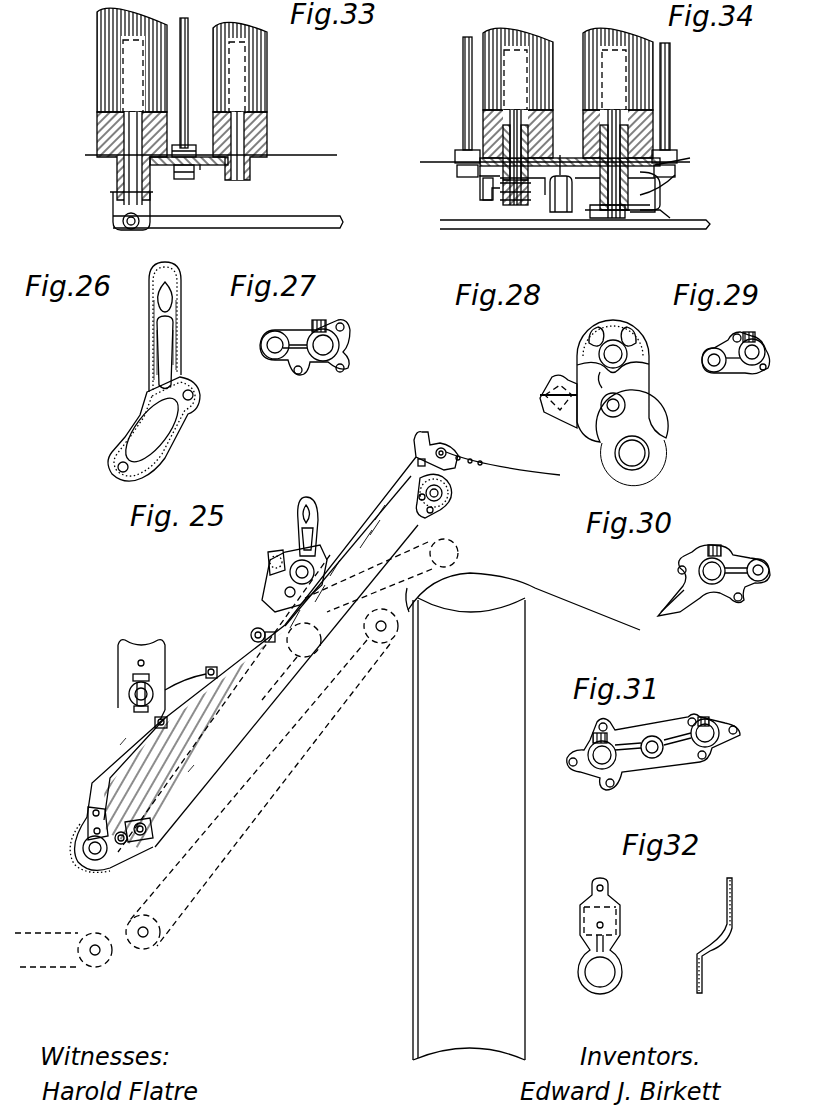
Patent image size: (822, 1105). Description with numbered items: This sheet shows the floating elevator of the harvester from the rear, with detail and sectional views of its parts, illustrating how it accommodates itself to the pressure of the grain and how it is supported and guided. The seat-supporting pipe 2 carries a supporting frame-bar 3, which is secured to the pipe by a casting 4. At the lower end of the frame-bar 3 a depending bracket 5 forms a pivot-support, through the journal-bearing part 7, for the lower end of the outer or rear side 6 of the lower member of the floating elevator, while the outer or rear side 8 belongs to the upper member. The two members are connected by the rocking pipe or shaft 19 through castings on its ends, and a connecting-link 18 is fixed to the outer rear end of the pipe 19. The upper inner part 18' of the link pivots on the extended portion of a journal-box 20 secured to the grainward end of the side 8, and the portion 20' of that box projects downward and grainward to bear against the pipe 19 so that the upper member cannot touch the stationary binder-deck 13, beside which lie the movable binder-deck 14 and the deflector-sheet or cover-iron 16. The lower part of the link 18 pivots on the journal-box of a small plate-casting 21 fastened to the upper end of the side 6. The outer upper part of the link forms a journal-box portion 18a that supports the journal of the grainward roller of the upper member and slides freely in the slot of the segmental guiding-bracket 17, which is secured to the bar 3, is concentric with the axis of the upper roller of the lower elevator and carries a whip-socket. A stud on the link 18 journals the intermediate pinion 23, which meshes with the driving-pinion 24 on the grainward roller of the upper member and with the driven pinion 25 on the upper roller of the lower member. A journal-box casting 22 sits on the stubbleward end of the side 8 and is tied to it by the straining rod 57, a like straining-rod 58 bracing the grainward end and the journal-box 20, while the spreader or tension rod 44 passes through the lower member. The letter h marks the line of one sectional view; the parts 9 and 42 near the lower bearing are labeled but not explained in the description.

In FIG. 25, the seat-supporting pipe 2 is at (118, 695).
In FIG. 33, the supporting frame-bar 3 is at (250, 218).
In FIG. 34, the supporting frame-bar 3 is at (575, 233).
In FIG. 25, the supporting frame-bar 3 is at (113, 742).
In FIG. 25, the casting 4 is at (186, 697).
In FIG. 33, the depending bracket 5 is at (113, 212).
In FIG. 32, the depending bracket 5 is at (580, 946).
In FIG. 25, the depending bracket 5 is at (86, 826).
In FIG. 33, the outer or rear side of the lower member of the floating elevator 6 is at (211, 168).
In FIG. 34, the outer or rear side of the lower member of the floating elevator 6 is at (555, 170).
In FIG. 25, the outer or rear side of the lower member of the floating elevator 6 is at (182, 770).
In FIG. 33, the journal-bearing part 7 is at (208, 166).
In FIG. 31, the journal-bearing part 7 is at (638, 738).
In FIG. 25, the journal-bearing part 7 is at (83, 848).
In FIG. 34, the outer or rear side of the upper member of the floating elevator 8 is at (673, 152).
In FIG. 25, the outer or rear side of the upper member of the floating elevator 8 is at (266, 651).
In FIG. 25, the bearing cap 9 is at (72, 862).
In FIG. 25, the fixed or stationary binder-deck 13 is at (458, 582).
In FIG. 34, the movable binder-deck 14 is at (459, 107).
In FIG. 25, the movable binder-deck 14 is at (524, 601).
In FIG. 25, the deflector-sheet or cover-iron 16 is at (503, 463).
In FIG. 34, the segmental guiding-bracket 17 is at (650, 218).
In FIG. 26, the segmental guiding-bracket 17 is at (148, 347).
In FIG. 25, the segmental guiding-bracket 17 is at (298, 532).
In FIG. 34, the connecting-link 18 is at (567, 193).
In FIG. 28, the connecting-link 18 is at (599, 403).
In FIG. 25, the connecting-link 18 is at (279, 578).
In FIG. 34, the upper inner part of the connecting-link 18' is at (666, 191).
In FIG. 34, the journal-box portion 18a is at (650, 207).
In FIG. 28, the journal-box portion 18a is at (628, 350).
In FIG. 28, the rock pipe or shaft 19 is at (549, 390).
In FIG. 25, the rock pipe or shaft 19 is at (272, 552).
In FIG. 34, the journal-box 20 is at (642, 163).
In FIG. 30, the journal-box 20 is at (710, 580).
In FIG. 30, the projecting portion of the journal-box 20' is at (688, 607).
In FIG. 34, the small plate-casting 21 is at (482, 170).
In FIG. 27, the small plate-casting 21 is at (262, 370).
In FIG. 25, the small plate-casting 21 is at (277, 652).
In FIG. 29, the journal-box casting 22 is at (748, 350).
In FIG. 25, the journal-box casting 22 is at (447, 496).
In FIG. 34, the intermediate pinion 23 is at (560, 212).
In FIG. 34, the driving-pinion 24 is at (598, 218).
In FIG. 34, the driven pinion 25 is at (505, 205).
In FIG. 33, the rod 42 is at (186, 18).
In FIG. 25, the rod 42 is at (125, 842).
In FIG. 25, the spreader or tension rod 44 is at (252, 630).
In FIG. 25, the tension or straining rod 57 is at (433, 512).
In FIG. 34, the straining-rod 58 is at (670, 73).
In FIG. 25, the section line h is at (160, 826).